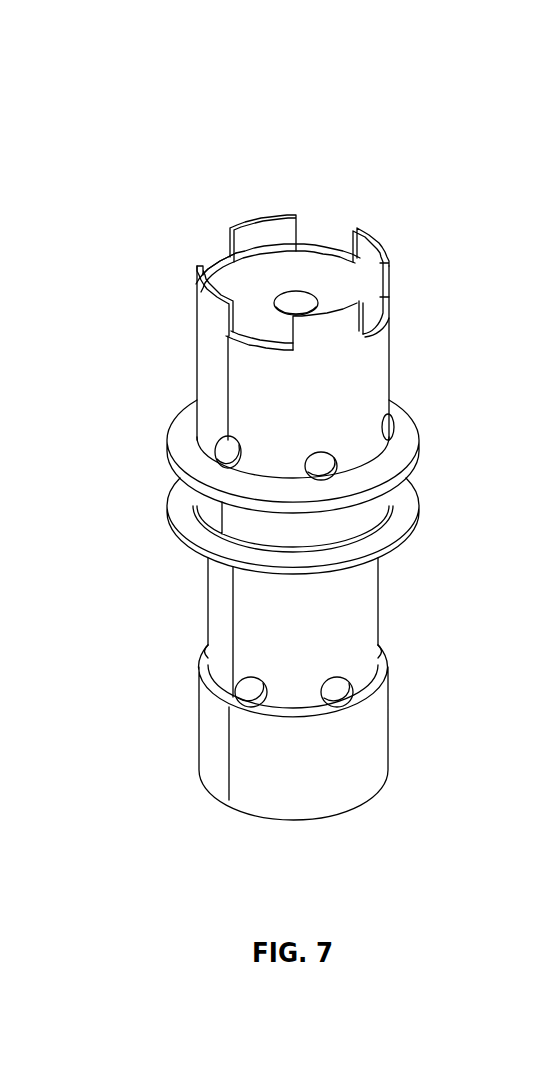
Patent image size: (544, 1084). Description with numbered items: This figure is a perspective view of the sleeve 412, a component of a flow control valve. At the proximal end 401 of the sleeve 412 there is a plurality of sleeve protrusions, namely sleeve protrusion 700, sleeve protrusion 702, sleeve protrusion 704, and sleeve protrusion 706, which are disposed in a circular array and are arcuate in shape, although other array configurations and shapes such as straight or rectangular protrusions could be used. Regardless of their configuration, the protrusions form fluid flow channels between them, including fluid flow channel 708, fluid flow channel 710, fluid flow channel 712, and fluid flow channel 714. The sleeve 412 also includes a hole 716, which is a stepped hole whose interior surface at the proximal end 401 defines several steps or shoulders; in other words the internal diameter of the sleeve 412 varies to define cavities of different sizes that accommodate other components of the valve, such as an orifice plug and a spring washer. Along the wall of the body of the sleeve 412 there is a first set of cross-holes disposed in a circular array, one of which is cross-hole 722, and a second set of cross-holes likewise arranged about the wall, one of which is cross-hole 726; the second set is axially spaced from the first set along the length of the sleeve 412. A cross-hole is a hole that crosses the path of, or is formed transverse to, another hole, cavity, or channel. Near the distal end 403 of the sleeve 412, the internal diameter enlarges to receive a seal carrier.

The proximal end 401 is at (319, 66).
The distal end 403 is at (319, 869).
The sleeve 412 is at (131, 188).
The sleeve protrusion 700 is at (247, 214).
The sleeve protrusion 702 is at (374, 240).
The sleeve protrusion 704 is at (364, 305).
The sleeve protrusion 706 is at (206, 279).
The fluid flow channel 708 is at (329, 232).
The fluid flow channel 710 is at (362, 295).
The fluid flow channel 712 is at (264, 334).
The fluid flow channel 714 is at (218, 254).
The hole 716 is at (298, 296).
The cross-hole 722 is at (400, 429).
The cross-hole 726 is at (386, 650).